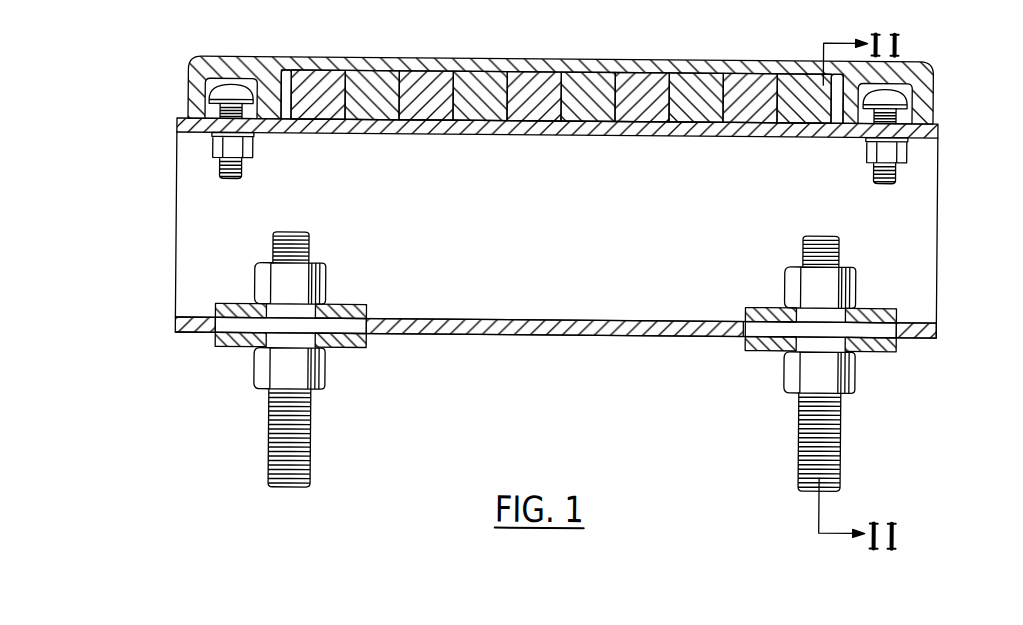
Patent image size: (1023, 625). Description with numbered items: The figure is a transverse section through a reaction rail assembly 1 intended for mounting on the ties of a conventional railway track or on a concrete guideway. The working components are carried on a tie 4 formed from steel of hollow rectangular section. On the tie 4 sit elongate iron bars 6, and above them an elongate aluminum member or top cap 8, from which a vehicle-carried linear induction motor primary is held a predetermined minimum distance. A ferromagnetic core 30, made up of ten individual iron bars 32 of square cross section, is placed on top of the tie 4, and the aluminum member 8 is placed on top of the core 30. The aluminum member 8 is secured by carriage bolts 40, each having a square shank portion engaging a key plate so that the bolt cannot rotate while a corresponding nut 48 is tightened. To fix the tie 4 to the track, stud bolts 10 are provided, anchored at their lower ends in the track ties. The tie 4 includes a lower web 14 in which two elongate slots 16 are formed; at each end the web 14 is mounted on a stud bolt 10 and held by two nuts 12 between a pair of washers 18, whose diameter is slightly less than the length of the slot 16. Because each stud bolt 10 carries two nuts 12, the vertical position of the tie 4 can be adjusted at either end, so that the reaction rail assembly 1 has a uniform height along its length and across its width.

The reaction rail assembly 1 is at (544, 356).
The tie 4 is at (917, 222).
The elongate iron bar 6 is at (478, 78).
The top cap 8 is at (887, 66).
The stud bolt 10 is at (313, 442).
The nut 12 is at (313, 277).
The lower web 14 is at (622, 333).
The elongate slot 16 is at (226, 327).
The washer 18 is at (357, 311).
The ferromagnetic core 30 is at (640, 76).
The iron bar 32 is at (590, 120).
The carriage bolt 40 is at (887, 94).
The nut 48 is at (867, 152).